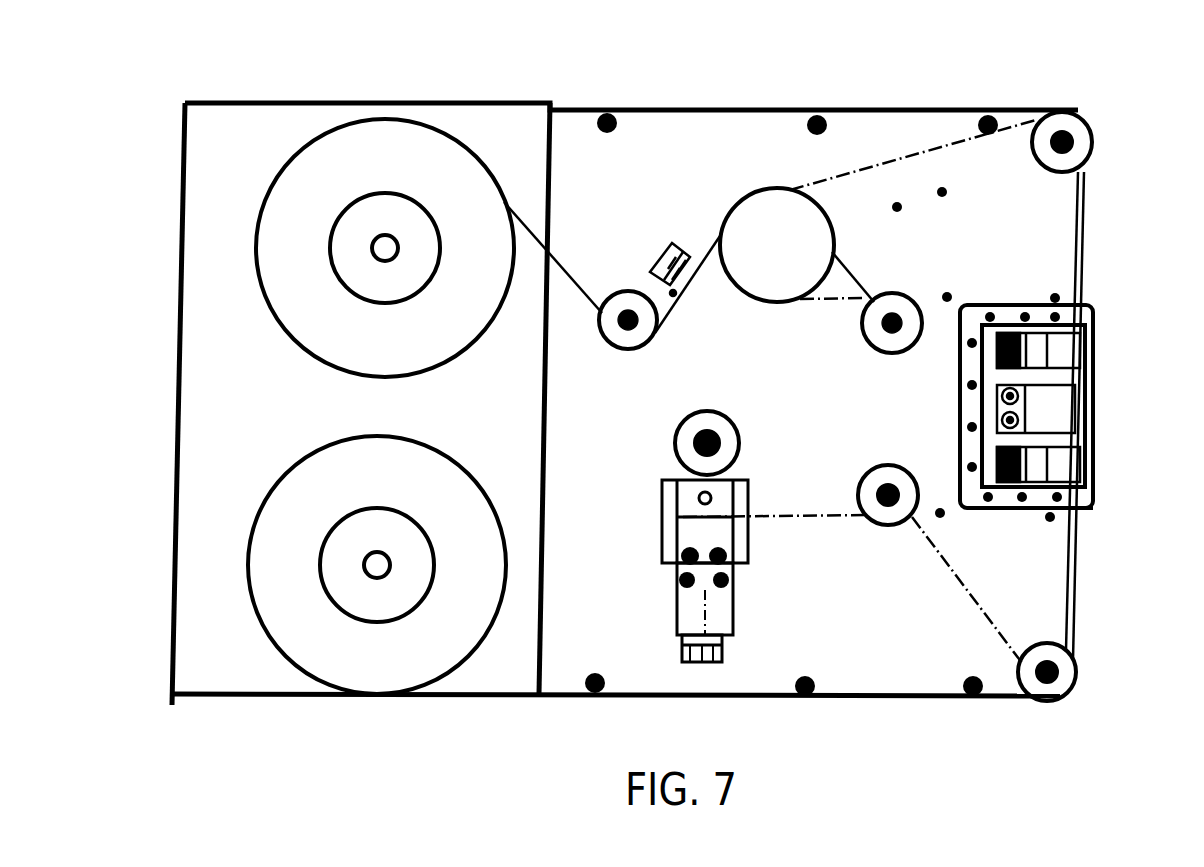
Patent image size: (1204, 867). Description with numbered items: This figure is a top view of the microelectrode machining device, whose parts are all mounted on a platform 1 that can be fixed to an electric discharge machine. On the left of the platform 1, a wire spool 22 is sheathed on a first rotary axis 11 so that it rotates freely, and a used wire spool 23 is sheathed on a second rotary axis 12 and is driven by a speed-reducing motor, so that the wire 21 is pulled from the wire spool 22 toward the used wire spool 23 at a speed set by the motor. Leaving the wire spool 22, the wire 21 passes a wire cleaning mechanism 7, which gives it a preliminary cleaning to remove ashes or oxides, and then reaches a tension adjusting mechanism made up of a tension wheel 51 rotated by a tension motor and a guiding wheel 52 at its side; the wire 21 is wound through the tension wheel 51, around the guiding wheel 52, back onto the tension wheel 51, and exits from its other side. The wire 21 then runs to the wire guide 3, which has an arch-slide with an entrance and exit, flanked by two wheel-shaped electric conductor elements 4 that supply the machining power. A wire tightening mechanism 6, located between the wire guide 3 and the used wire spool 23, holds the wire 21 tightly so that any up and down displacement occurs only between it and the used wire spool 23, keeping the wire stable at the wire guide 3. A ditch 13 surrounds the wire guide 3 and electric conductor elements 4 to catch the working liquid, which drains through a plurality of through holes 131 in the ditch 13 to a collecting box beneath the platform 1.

The platform 1 is at (667, 122).
The first rotary axis 11 is at (372, 248).
The second rotary axis 12 is at (370, 572).
The ditch 13 is at (970, 378).
The through holes 131 is at (1030, 508).
The wire 21 is at (565, 280).
The wire spool 22 is at (410, 132).
The used wire spool 23 is at (262, 583).
The wire guide 3 is at (1057, 400).
The electric conductor elements 4 is at (1075, 343).
The tension wheel 51 is at (777, 208).
The guiding wheel 52 is at (888, 342).
The wire tightening mechanism 6 is at (723, 535).
The wire cleaning mechanism 7 is at (673, 243).